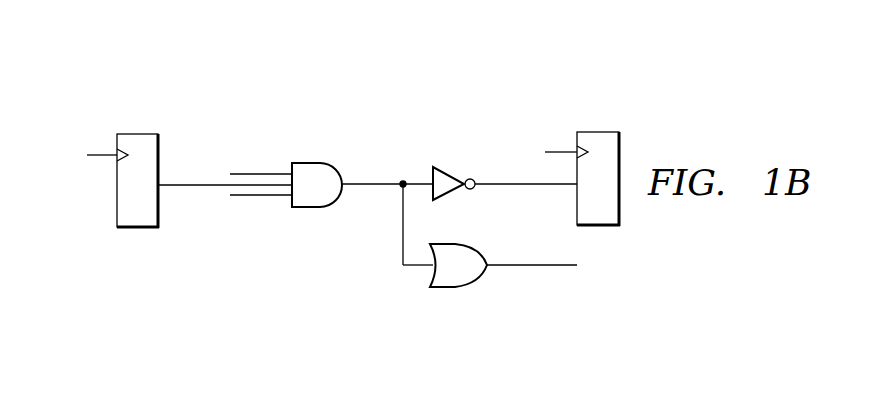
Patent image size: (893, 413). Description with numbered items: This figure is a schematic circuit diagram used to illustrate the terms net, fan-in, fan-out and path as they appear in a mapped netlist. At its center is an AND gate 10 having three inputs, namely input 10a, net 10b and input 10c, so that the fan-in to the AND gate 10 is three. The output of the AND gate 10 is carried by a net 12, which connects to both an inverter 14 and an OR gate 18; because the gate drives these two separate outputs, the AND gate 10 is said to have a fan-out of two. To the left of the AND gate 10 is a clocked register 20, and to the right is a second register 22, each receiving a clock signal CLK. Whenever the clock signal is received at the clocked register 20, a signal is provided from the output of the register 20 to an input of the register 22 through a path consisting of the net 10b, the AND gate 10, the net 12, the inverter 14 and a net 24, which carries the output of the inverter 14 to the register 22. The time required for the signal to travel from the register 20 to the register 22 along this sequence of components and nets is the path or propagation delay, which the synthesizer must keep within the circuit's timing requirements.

The AND gate 10 is at (318, 163).
The input 10a is at (265, 173).
The net 10b is at (204, 186).
The input 10c is at (265, 196).
The net 12 is at (373, 183).
The inverter 14 is at (452, 173).
The OR gate 18 is at (462, 287).
The clocked register 20 is at (136, 134).
The register 22 is at (602, 132).
The net 24 is at (513, 186).